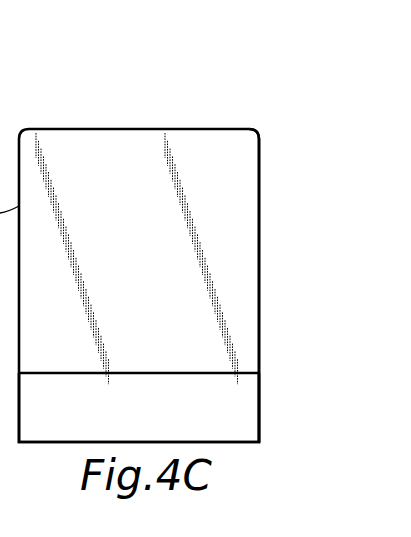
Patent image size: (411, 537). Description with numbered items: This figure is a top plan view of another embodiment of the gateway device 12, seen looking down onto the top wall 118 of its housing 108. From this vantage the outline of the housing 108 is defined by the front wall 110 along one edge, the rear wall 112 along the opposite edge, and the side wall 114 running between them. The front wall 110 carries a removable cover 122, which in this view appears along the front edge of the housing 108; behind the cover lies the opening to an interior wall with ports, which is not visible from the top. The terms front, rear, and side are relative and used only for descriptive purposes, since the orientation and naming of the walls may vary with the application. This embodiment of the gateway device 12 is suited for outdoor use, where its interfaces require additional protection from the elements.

The gateway device 12 is at (126, 119).
The housing 108 is at (259, 128).
The front wall 110 is at (203, 372).
The rear wall 112 is at (190, 128).
The side wall 114 is at (259, 273).
The top wall 118 is at (74, 148).
The removable cover 122 is at (253, 407).